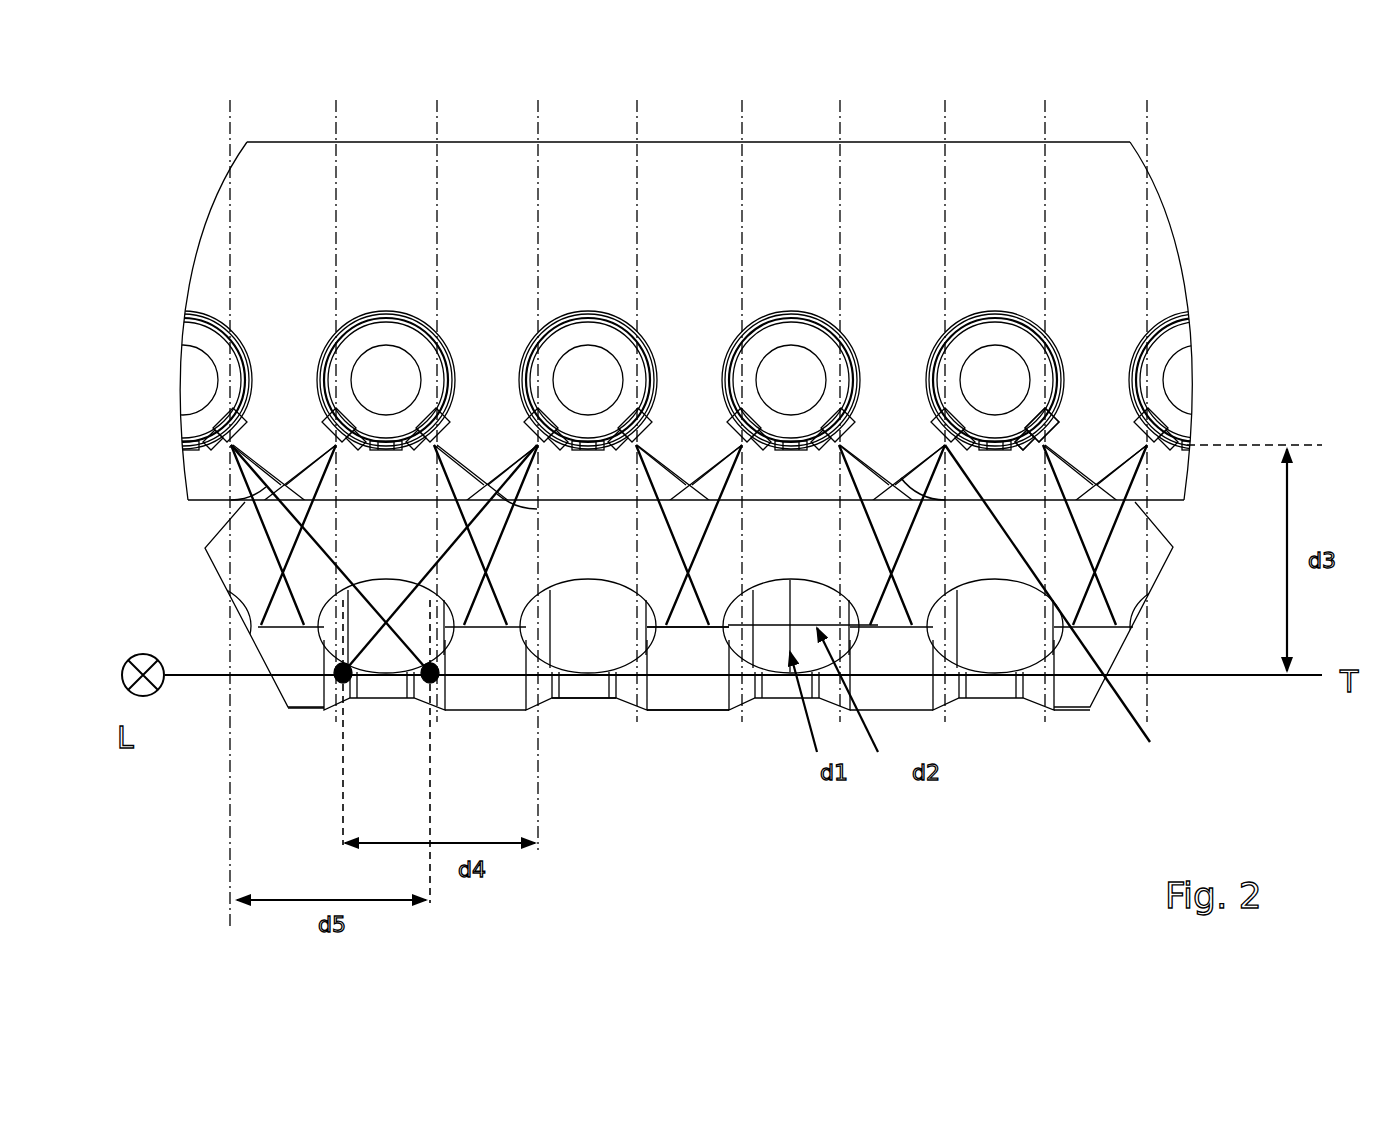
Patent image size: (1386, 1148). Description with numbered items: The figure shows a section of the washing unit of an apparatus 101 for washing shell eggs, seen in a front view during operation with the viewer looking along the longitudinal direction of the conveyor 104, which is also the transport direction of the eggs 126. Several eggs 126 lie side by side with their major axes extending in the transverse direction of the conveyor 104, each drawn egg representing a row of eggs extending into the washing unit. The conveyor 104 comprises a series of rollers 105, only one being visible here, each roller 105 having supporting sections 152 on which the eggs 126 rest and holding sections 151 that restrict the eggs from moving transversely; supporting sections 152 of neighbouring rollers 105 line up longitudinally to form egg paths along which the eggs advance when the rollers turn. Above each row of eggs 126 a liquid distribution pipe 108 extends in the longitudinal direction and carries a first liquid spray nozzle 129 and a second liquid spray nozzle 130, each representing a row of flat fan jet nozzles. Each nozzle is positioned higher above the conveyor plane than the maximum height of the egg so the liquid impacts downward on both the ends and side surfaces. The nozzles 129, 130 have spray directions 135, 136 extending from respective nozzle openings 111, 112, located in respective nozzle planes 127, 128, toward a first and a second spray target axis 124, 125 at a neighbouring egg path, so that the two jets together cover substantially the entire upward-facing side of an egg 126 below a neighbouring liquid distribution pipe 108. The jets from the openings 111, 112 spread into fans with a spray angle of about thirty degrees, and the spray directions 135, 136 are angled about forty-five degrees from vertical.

The apparatus for washing shell eggs 101 is at (185, 185).
The conveyor 104 is at (1140, 655).
The roller 105 is at (1075, 692).
The liquid distribution pipe 108 is at (580, 307).
The first nozzle opening 111 is at (1048, 608).
The second nozzle opening 112 is at (1040, 447).
The first spray target axis 124 is at (343, 673).
The second spray target axis 125 is at (430, 673).
The egg 126 is at (995, 633).
The first nozzle plane 127 is at (738, 458).
The second nozzle plane 128 is at (637, 499).
The first liquid spray nozzle 129 is at (928, 428).
The second liquid spray nozzle 130 is at (1053, 425).
The first spray direction 135 is at (457, 545).
The second spray direction 136 is at (328, 552).
The holding section 151 is at (665, 690).
The supporting section 152 is at (597, 687).